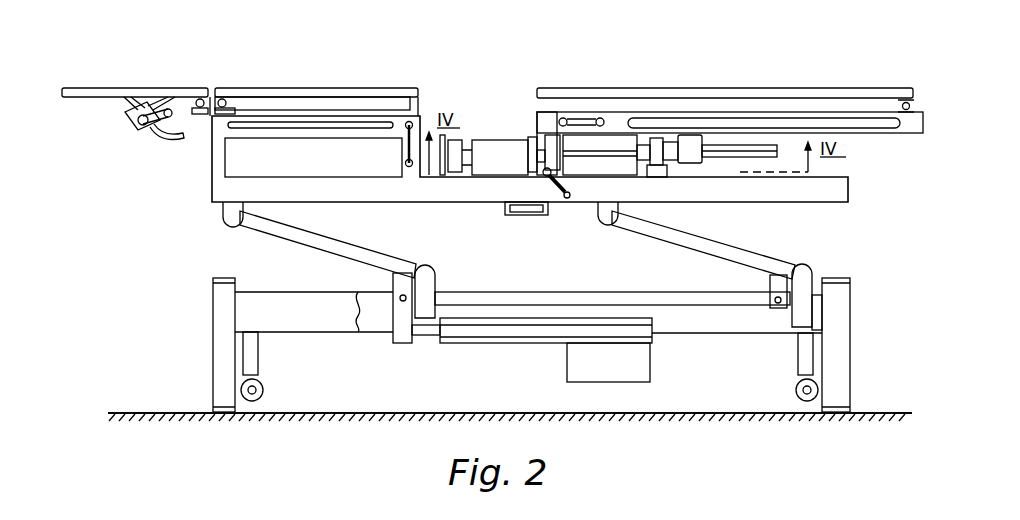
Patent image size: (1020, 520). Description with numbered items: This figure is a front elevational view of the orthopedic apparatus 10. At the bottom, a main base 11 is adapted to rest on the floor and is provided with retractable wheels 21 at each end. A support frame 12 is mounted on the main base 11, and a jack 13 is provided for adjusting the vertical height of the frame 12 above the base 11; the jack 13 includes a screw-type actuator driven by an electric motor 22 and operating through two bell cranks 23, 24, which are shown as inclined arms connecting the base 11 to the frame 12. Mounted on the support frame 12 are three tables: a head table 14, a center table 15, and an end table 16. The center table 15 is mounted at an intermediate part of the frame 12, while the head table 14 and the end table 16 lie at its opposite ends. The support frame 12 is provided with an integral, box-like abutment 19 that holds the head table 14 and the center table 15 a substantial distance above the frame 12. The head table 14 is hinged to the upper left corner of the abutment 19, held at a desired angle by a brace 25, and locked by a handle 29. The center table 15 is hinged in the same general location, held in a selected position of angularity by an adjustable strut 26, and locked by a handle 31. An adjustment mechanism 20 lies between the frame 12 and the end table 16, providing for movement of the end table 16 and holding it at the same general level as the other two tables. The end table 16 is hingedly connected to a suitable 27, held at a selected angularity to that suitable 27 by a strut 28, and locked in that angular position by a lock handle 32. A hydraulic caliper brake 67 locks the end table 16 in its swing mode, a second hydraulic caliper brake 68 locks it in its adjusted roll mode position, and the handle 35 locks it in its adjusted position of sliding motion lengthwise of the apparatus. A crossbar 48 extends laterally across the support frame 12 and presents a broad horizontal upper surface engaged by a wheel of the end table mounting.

The orthopedic apparatus 10 is at (344, 88).
The main base 11 is at (222, 312).
The support frame 12 is at (222, 183).
The jack 13 is at (502, 330).
The head table 14 is at (110, 88).
The center table 15 is at (292, 88).
The end table 16 is at (733, 88).
The box-like abutment 19 is at (317, 132).
The adjustment mechanism 20 is at (497, 158).
The retractable wheels 21 is at (265, 382).
The electric motor 22 is at (630, 363).
The bell crank 23 is at (280, 230).
The bell crank 24 is at (652, 233).
The brace 25 is at (122, 110).
The adjustable strut 26 is at (422, 106).
The suitable 27 is at (912, 135).
The strut 28 is at (587, 135).
The handle 29 is at (166, 128).
The handle 31 is at (400, 142).
The lock handle 32 is at (600, 118).
The handle 35 is at (566, 200).
The crossbar 48 is at (672, 178).
The hydraulic caliper brake 67 is at (468, 135).
The hydraulic caliper brake 68 is at (527, 222).